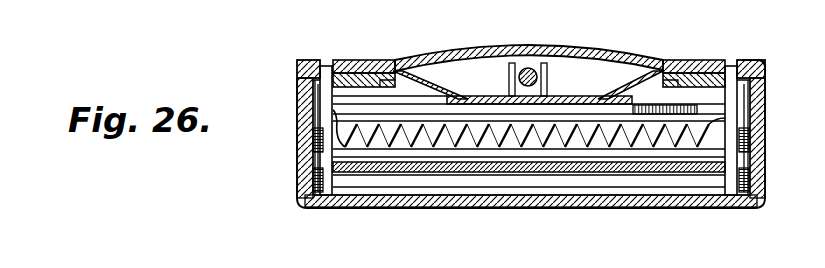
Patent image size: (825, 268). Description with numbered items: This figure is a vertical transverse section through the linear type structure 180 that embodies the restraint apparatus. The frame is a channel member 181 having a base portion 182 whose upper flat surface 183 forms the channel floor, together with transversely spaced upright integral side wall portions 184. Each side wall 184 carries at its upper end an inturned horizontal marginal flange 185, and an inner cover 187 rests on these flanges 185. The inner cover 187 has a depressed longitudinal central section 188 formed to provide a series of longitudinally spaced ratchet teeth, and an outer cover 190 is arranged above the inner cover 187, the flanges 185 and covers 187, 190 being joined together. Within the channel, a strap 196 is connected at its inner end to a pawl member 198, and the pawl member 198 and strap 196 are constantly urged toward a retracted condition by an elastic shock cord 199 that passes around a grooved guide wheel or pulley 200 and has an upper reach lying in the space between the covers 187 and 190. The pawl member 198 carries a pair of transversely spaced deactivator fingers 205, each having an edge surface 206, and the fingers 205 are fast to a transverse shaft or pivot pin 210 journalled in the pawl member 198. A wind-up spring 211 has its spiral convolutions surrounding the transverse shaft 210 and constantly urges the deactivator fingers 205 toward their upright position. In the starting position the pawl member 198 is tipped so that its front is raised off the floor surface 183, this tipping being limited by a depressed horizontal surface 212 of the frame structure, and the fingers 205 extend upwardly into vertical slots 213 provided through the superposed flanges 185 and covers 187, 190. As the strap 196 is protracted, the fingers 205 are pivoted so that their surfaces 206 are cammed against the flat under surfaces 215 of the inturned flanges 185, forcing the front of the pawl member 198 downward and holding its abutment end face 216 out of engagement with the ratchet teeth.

The linear type structure 180 is at (468, 40).
The channel member 181 is at (452, 205).
The base portion 182 is at (506, 206).
The upper flat surface 183 is at (581, 200).
The side wall portions 184 is at (306, 155).
The inturned horizontal marginal flange 185 is at (365, 78).
The inner cover 187 is at (760, 80).
The depressed longitudinal central section 188 is at (590, 100).
The outer cover 190 is at (590, 56).
The strap 196 is at (384, 175).
The pawl member 198 is at (311, 120).
The elastic shock cord 199 is at (527, 68).
The grooved guide wheel or pulley 200 is at (510, 80).
The deactivator fingers 205 is at (313, 175).
The edge surface 206 is at (327, 64).
The transverse shaft or pivot pin 210 is at (530, 142).
The wind-up spring 211 is at (641, 145).
The depressed horizontal surface 212 is at (462, 99).
The vertical slots 213 is at (335, 64).
The flat under surfaces 215 is at (368, 88).
The abutment end face 216 is at (628, 86).